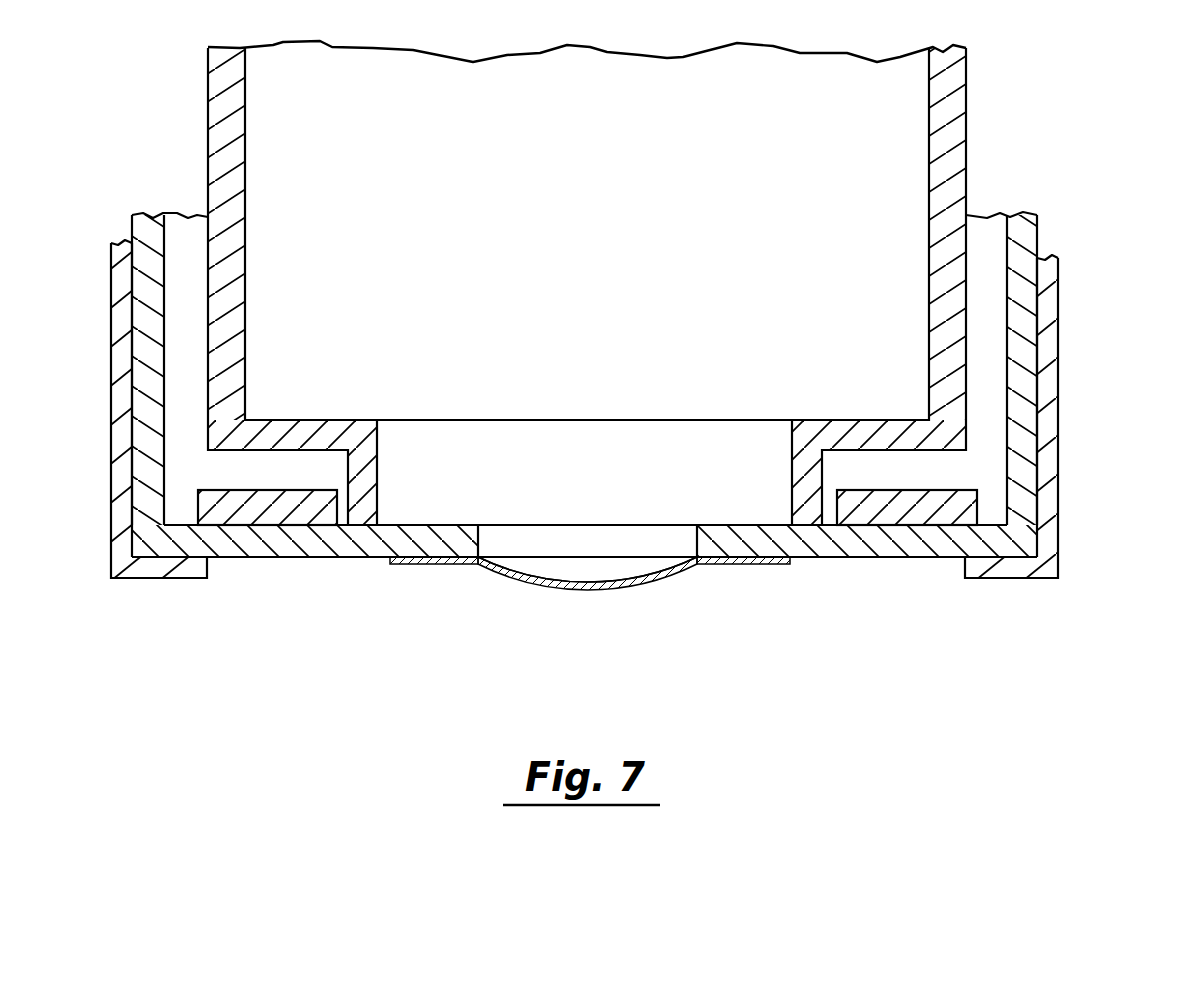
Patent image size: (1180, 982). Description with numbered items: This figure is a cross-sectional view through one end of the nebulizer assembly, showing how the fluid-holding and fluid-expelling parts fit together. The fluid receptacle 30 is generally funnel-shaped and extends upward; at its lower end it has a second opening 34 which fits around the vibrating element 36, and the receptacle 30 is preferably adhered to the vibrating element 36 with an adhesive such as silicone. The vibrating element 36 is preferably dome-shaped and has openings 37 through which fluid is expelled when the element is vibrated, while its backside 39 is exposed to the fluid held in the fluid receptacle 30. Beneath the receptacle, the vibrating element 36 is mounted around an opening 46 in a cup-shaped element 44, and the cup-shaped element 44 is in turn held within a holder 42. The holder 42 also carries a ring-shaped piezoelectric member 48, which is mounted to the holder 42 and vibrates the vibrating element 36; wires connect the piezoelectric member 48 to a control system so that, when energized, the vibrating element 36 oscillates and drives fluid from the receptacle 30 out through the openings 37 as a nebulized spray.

The fluid receptacle 30 is at (950, 158).
The second opening 34 is at (770, 507).
The vibrating element 36 is at (512, 575).
The openings 37 is at (613, 585).
The backside 39 is at (582, 577).
The holder 42 is at (1038, 452).
The cup-shaped element 44 is at (1025, 247).
The opening 46 is at (502, 540).
The ring-shaped piezoelectric member 48 is at (272, 503).